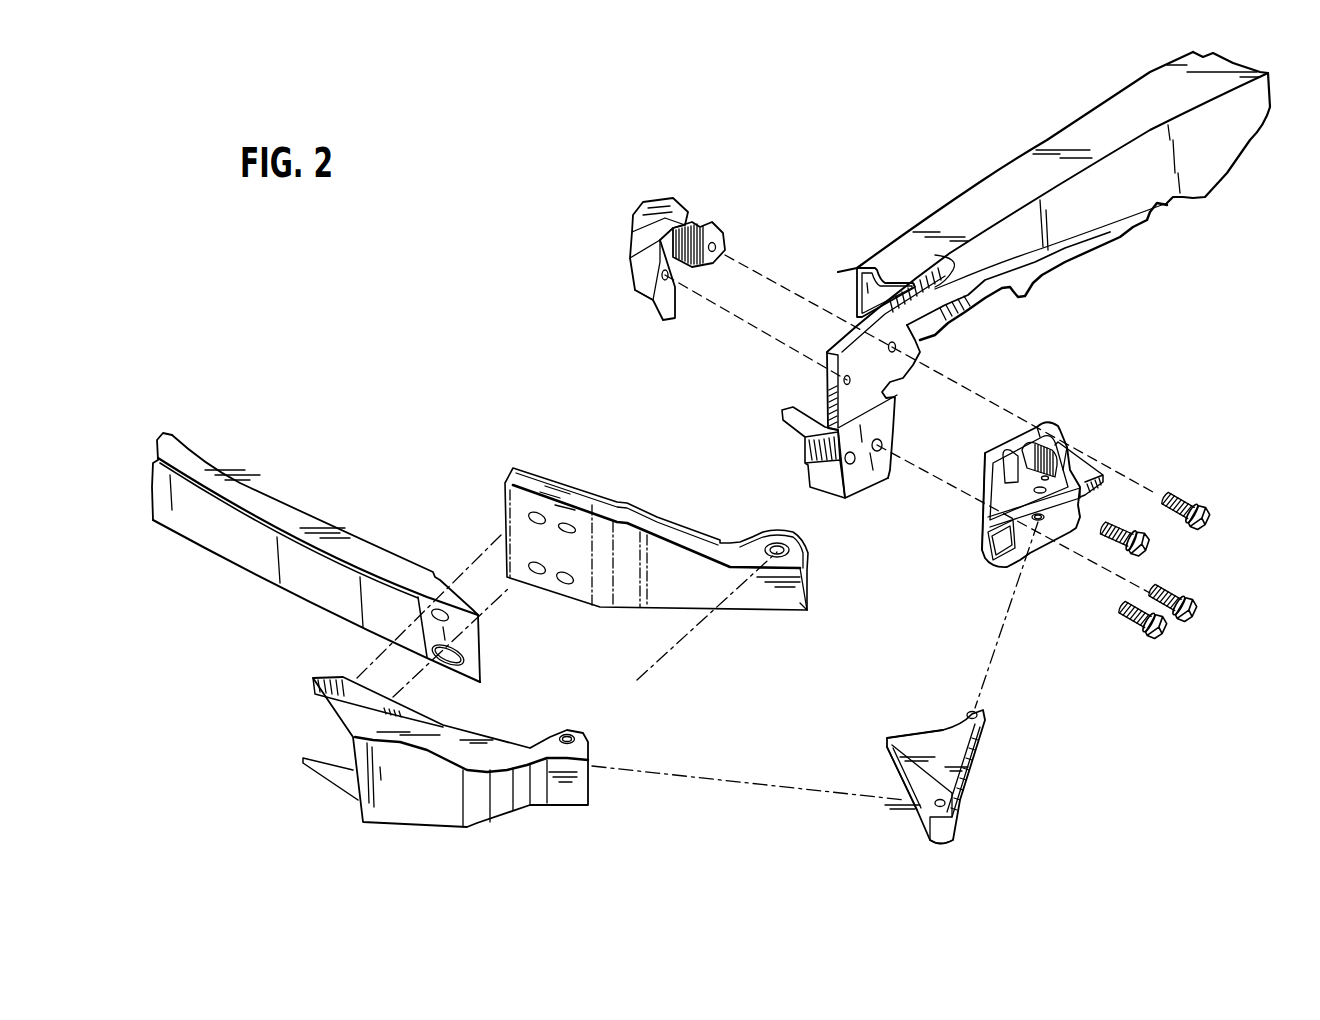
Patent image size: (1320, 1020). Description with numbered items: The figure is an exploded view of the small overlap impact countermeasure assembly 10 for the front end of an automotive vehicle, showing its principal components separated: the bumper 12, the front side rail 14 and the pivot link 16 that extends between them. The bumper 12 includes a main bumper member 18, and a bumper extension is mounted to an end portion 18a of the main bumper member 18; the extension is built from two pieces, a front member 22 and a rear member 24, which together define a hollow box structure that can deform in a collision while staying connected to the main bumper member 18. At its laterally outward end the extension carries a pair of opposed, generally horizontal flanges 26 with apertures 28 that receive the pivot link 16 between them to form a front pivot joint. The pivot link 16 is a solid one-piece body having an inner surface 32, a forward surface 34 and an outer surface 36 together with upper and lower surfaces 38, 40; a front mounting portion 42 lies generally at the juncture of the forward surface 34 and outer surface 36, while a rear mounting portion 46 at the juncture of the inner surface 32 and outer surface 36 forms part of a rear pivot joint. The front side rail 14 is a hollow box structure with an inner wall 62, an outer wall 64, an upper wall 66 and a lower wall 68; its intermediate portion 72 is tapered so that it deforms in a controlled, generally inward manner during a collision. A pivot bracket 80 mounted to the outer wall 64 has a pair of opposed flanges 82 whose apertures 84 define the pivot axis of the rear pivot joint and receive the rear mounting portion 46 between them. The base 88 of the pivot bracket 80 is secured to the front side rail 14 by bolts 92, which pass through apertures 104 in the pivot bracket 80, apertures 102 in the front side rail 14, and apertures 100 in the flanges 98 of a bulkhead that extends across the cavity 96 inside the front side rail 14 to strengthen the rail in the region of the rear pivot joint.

The small overlap impact countermeasure assembly 10 is at (492, 258).
The bumper 12 is at (233, 657).
The front side rail 14 is at (985, 145).
The pivot link 16 is at (1003, 812).
The main bumper member 18 is at (243, 543).
The end portion of main bumper 18a is at (330, 590).
The front member 22 is at (397, 808).
The rear member 24 is at (600, 512).
The flanges 26 is at (792, 572).
The apertures 28 is at (772, 548).
The inner surface 32 is at (905, 732).
The forward surface 34 is at (898, 785).
The outer surface 36 is at (980, 767).
The upper surface 38 is at (945, 750).
The lower surface 40 is at (930, 833).
The front mounting portion 42 is at (965, 843).
The rear mounting portion 46 is at (1000, 727).
The inner wall 62 is at (857, 275).
The outer wall 64 is at (1080, 227).
The upper wall 66 is at (903, 263).
The lower wall 68 is at (845, 318).
The intermediate portion 72 is at (933, 205).
The pivot bracket 80 is at (1072, 408).
The flanges 82 is at (985, 552).
The apertures 84 is at (1048, 473).
The base 88 is at (982, 515).
The bolts 92 is at (1118, 528).
The cavity 96 is at (668, 202).
The flanges 98 is at (705, 225).
The apertures 100 is at (718, 247).
The apertures 102 is at (896, 348).
The apertures 104 is at (1006, 445).